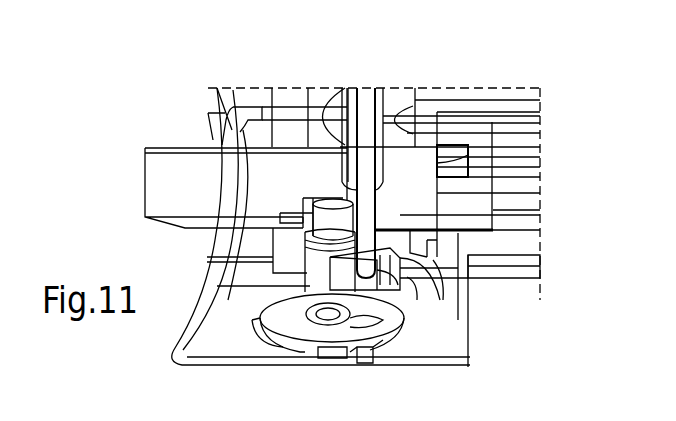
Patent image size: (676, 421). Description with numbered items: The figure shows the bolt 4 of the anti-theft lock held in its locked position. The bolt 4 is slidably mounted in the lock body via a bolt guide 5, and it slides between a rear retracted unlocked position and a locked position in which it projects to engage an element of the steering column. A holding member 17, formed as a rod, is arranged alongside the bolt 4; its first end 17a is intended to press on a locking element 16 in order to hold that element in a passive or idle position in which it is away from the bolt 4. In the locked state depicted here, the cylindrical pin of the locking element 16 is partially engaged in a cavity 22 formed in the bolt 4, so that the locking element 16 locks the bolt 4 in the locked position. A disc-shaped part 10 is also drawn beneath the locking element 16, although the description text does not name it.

The bolt 4 is at (157, 185).
The bolt guide 5 is at (255, 100).
The rotary disc 10 is at (300, 340).
The locking element 16 is at (386, 287).
The holding member 17 is at (366, 103).
The first end 17a is at (395, 258).
The cavity 22 is at (332, 200).